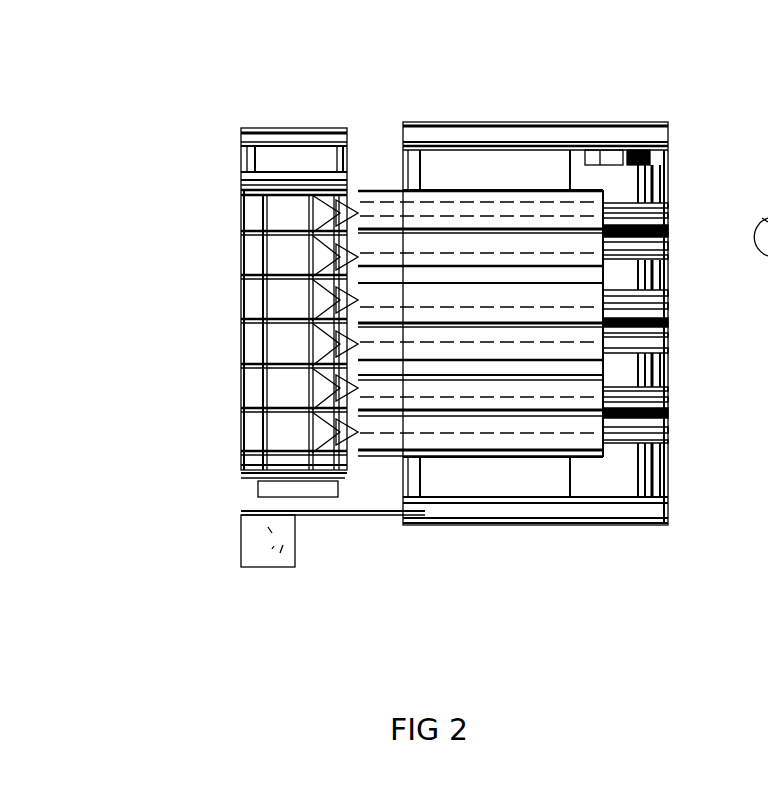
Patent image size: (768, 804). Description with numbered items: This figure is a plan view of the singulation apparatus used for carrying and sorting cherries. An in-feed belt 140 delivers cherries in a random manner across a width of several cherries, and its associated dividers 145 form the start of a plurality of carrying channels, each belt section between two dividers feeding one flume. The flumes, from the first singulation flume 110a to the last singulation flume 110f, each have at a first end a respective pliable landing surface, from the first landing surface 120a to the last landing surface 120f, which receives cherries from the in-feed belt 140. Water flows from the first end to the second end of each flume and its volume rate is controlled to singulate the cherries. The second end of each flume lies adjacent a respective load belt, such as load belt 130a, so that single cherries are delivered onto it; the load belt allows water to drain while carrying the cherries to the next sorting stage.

The in-feed belt 140 is at (243, 196).
The dividers 145 is at (243, 327).
The pliable landing surface 120a is at (347, 192).
The pliable landing surface 120f is at (322, 438).
The singulation flume 110a is at (463, 213).
The singulation flume 110f is at (510, 437).
The load belt 130a is at (673, 197).